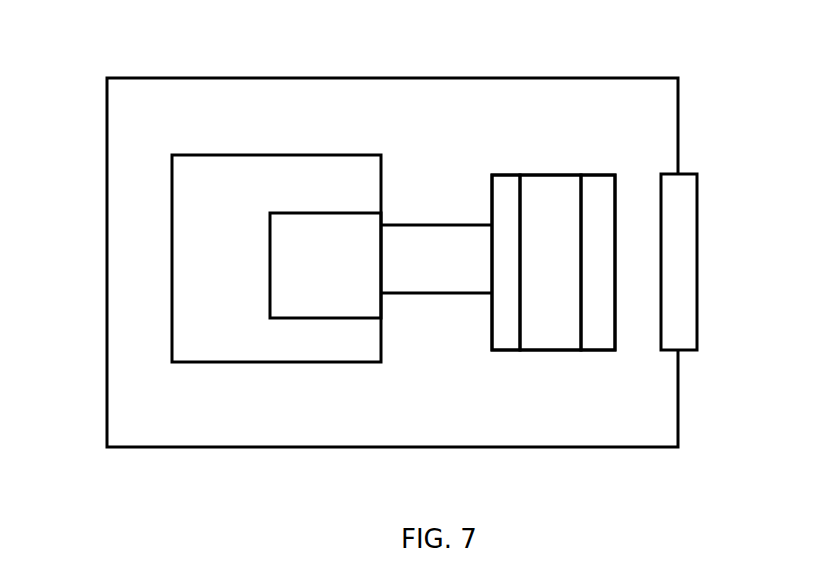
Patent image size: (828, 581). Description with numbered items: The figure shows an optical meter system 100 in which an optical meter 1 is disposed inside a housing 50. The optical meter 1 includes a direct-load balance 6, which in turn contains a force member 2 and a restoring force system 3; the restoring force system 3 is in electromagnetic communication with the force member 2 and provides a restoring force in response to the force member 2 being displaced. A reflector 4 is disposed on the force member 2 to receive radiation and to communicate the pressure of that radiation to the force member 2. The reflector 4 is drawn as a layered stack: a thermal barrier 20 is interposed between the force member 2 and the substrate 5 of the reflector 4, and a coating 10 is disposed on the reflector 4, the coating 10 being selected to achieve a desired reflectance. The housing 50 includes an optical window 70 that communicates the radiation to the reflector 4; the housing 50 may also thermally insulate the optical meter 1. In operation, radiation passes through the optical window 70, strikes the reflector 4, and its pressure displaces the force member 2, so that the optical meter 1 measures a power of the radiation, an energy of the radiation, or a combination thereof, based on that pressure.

The optical meter system 100 is at (58, 16).
The housing 50 is at (138, 77).
The optical meter 1 is at (368, 97).
The direct-load balance 6 is at (277, 175).
The restoring force system 3 is at (334, 243).
The force member 2 is at (424, 240).
The reflector 4 is at (561, 365).
The thermal barrier 20 is at (499, 182).
The substrate 5 is at (557, 182).
The coating 10 is at (598, 182).
The optical window 70 is at (685, 195).